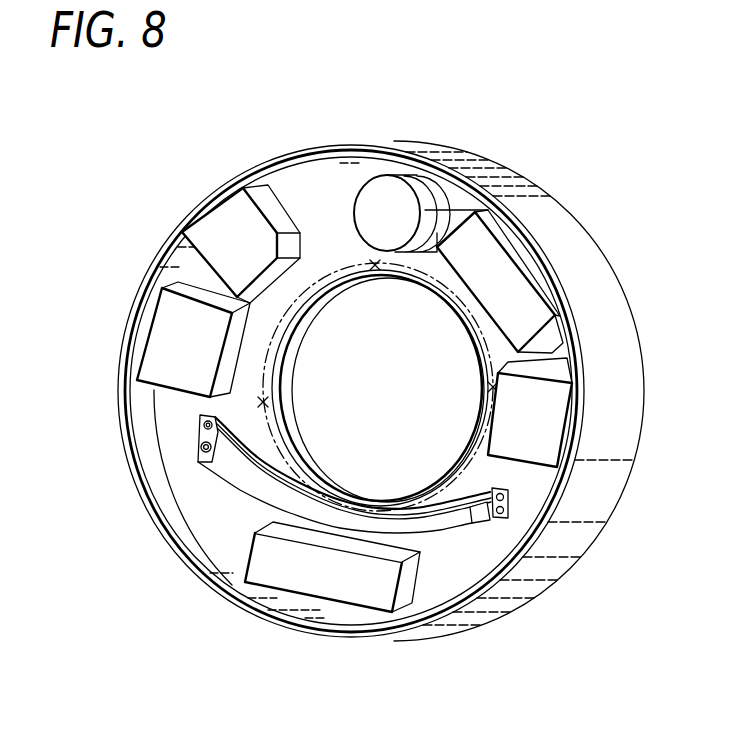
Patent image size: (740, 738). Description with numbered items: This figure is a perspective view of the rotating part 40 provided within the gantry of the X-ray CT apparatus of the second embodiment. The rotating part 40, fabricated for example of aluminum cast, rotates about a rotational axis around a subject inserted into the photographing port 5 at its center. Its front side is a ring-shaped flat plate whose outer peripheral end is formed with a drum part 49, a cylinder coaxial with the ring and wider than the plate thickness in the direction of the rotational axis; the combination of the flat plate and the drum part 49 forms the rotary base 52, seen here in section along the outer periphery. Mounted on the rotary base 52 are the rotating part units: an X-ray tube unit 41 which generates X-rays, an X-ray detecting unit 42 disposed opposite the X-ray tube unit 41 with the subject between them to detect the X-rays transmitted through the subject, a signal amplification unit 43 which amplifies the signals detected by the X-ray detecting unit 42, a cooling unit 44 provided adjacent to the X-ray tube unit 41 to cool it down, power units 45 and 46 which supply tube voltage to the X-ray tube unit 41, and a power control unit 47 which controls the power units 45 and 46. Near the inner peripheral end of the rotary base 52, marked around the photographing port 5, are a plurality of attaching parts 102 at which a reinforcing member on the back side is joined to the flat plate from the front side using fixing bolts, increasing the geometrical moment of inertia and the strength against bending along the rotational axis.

The rotating part 40 is at (309, 137).
The X-ray tube unit 41 is at (403, 195).
The X-ray detecting unit 42 is at (456, 522).
The signal amplification unit 43 is at (205, 497).
The cooling unit 44 is at (533, 313).
The power unit 45 is at (140, 343).
The power unit 46 is at (543, 418).
The power control unit 47 is at (231, 220).
The drum part 49 is at (508, 171).
The photographing port 5 is at (442, 463).
The rotary base 52 is at (570, 575).
The attaching parts 102 is at (372, 265).